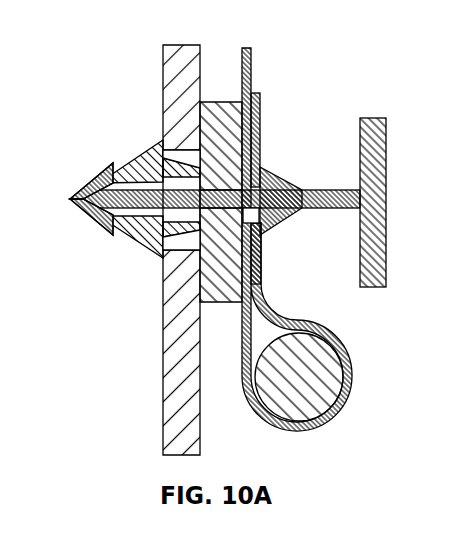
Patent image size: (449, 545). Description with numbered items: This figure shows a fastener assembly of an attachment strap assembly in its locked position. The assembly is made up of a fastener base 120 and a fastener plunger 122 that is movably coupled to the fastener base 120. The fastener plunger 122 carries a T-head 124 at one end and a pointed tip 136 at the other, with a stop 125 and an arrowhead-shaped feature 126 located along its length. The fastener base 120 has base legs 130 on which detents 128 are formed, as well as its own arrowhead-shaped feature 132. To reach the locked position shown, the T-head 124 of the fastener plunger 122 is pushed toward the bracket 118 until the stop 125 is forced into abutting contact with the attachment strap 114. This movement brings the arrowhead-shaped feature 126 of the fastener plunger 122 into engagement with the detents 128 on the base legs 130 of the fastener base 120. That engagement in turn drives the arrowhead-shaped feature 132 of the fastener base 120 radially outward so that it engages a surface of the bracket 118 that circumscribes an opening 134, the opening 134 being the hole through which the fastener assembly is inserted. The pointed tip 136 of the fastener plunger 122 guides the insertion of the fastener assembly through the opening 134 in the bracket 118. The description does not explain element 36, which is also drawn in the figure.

The bead / tubular member 36 is at (298, 408).
The attachment strap 114 is at (351, 372).
The bracket 118 is at (182, 408).
The fastener base 120 is at (214, 96).
The fastener plunger 122 is at (334, 140).
The T-head 124 is at (388, 202).
The stop 125 is at (272, 178).
The arrowhead-shaped feature 126 is at (170, 222).
The detents 128 is at (248, 232).
The base legs 130 is at (251, 120).
The arrowhead-shaped feature 132 is at (197, 176).
The opening 134 is at (187, 157).
The pointed tip 136 is at (70, 199).